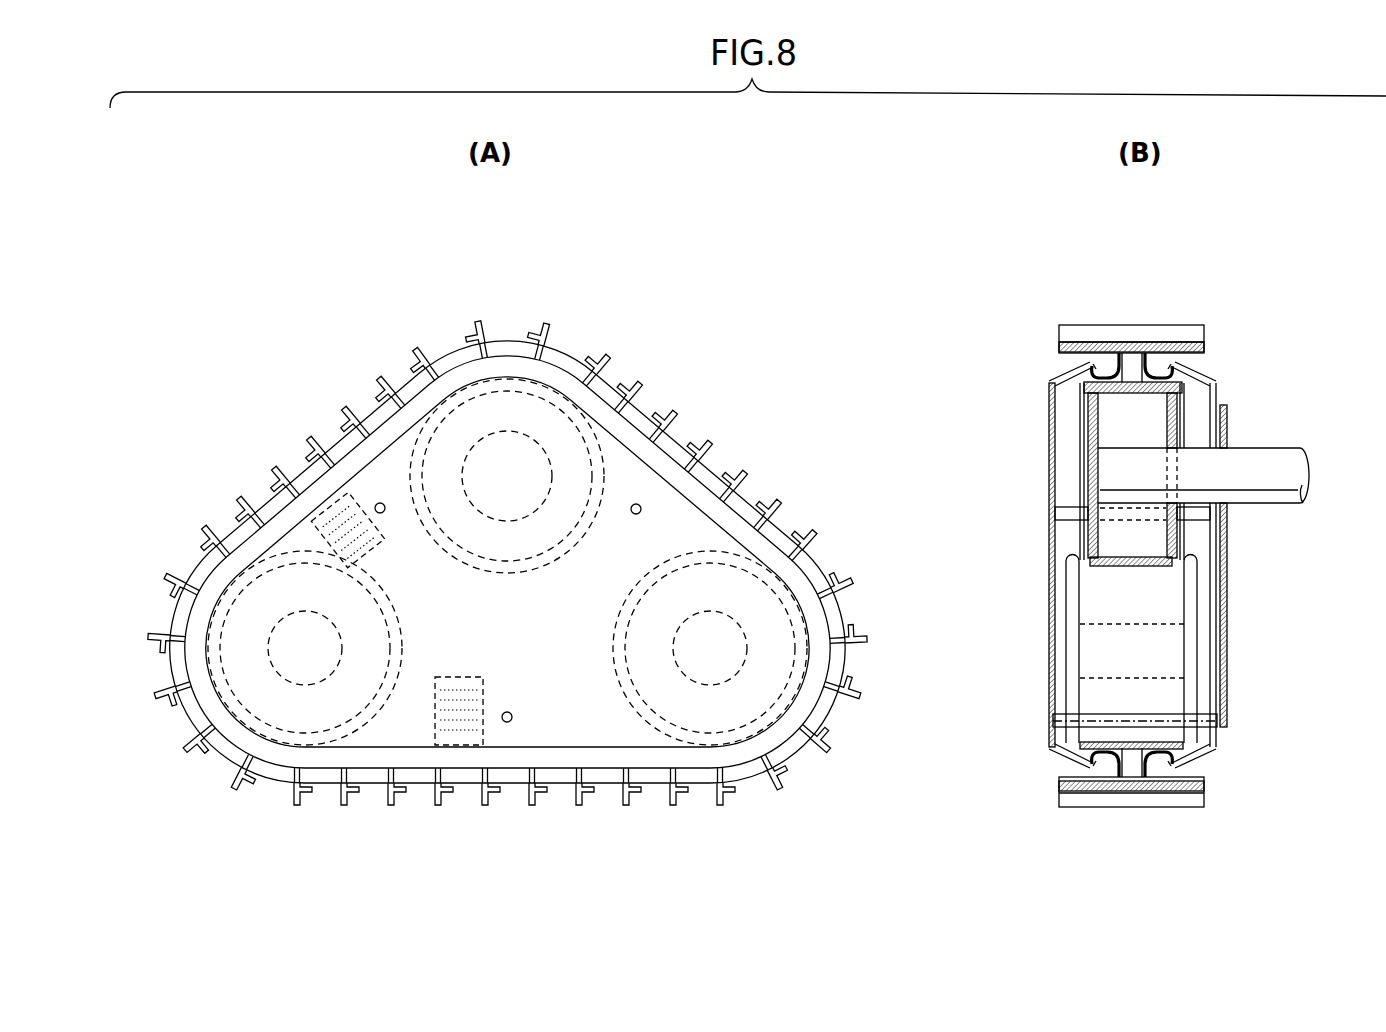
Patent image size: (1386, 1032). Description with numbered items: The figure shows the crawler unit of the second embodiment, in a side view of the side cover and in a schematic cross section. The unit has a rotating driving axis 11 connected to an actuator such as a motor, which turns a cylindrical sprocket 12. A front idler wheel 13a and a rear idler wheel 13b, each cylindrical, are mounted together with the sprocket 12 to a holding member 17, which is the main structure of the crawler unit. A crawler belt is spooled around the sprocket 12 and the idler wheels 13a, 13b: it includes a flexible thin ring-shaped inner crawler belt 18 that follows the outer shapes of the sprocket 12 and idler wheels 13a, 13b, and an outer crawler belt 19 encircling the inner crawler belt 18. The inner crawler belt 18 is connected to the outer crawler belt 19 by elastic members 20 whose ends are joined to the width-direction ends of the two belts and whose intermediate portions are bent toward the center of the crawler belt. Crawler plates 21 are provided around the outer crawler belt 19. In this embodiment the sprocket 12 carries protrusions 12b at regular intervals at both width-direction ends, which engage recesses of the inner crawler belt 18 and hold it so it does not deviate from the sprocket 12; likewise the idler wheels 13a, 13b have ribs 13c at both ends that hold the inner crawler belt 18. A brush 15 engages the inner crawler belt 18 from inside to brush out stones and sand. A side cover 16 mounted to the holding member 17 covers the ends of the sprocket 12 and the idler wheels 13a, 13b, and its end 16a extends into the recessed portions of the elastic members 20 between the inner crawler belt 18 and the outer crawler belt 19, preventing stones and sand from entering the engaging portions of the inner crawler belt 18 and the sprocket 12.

The rotating driving axis 11 is at (1273, 465).
The sprocket 12 is at (555, 385).
The protrusions 12b is at (1093, 380).
The front idler wheel 13a is at (782, 720).
The rear idler wheel 13b is at (240, 752).
The ribs 13c is at (1072, 743).
The brush 15 is at (385, 540).
The side cover 16 is at (698, 490).
The end of the side cover 16a is at (643, 407).
The holding member 17 is at (1227, 603).
The inner crawler belt 18 is at (1175, 366).
The outer crawler belt 19 is at (262, 520).
The elastic members 20 is at (196, 556).
The crawler plates 21 is at (800, 530).